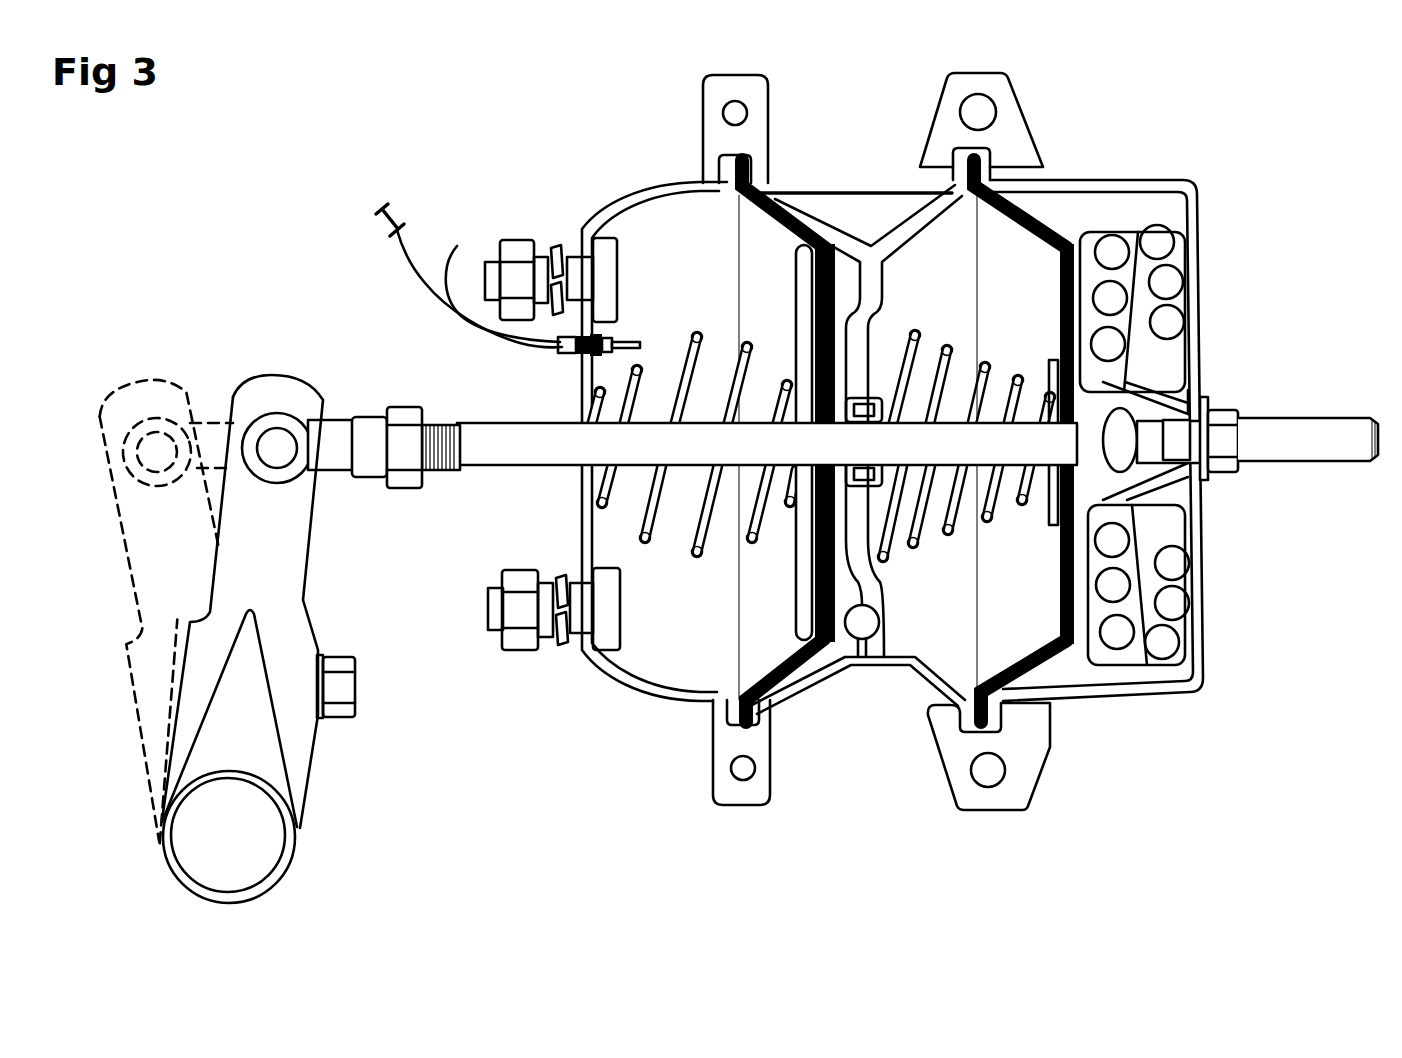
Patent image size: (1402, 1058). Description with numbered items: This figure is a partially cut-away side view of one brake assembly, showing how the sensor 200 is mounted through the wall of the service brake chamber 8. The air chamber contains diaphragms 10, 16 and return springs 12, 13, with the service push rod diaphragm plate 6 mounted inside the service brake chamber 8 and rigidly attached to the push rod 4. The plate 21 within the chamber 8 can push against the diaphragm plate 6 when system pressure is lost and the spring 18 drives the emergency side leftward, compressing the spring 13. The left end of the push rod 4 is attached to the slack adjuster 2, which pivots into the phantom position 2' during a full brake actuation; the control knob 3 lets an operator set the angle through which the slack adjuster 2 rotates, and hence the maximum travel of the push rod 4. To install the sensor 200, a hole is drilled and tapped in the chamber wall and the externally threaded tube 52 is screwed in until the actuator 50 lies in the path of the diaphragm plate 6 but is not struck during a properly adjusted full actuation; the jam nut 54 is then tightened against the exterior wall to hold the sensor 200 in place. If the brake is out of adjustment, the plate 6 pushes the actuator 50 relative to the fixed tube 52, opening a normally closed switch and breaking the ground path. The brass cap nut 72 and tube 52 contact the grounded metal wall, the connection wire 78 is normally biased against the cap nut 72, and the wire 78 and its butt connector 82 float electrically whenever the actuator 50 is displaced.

The slack adjuster 2 is at (258, 607).
The slack adjuster rotated position 2' is at (169, 575).
The control knob 3 is at (338, 733).
The push rod 4 is at (475, 418).
The service push rod diaphragm plate 6 is at (790, 553).
The service brake chamber 8 is at (642, 703).
The diaphragm 10 is at (807, 675).
The return spring 12 is at (752, 335).
The return spring 13 is at (943, 335).
The diaphragm 16 is at (1053, 218).
The spring 18 is at (1158, 228).
The plate 21 is at (843, 345).
The actuator 50 is at (650, 355).
The externally threaded tube 52 is at (612, 337).
The jam nut 54 is at (598, 365).
The brass cap nut 72 is at (505, 283).
The connection wire 78 is at (418, 285).
The butt connector 82 is at (404, 207).
The sensor 200 is at (566, 365).